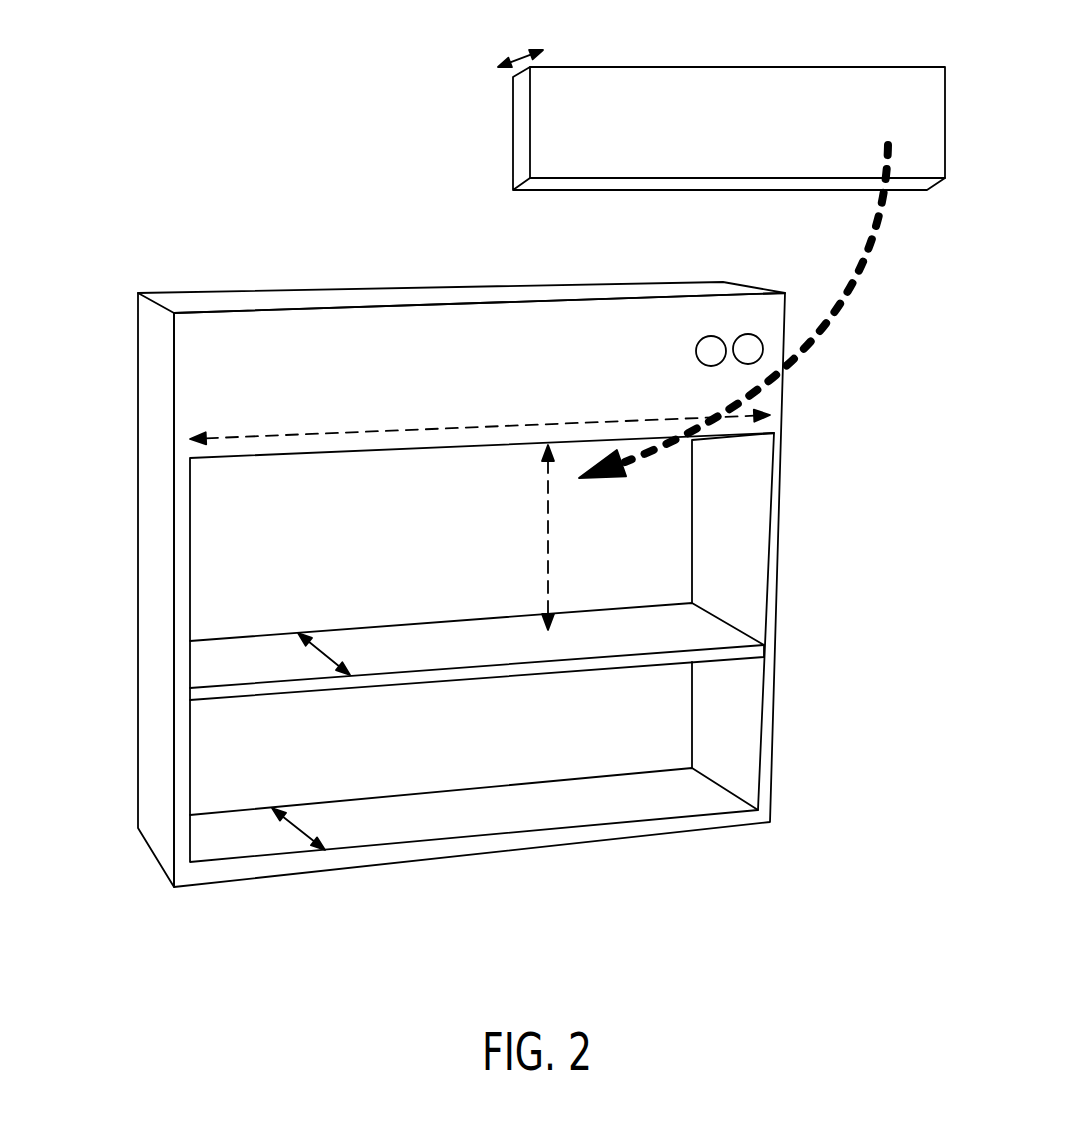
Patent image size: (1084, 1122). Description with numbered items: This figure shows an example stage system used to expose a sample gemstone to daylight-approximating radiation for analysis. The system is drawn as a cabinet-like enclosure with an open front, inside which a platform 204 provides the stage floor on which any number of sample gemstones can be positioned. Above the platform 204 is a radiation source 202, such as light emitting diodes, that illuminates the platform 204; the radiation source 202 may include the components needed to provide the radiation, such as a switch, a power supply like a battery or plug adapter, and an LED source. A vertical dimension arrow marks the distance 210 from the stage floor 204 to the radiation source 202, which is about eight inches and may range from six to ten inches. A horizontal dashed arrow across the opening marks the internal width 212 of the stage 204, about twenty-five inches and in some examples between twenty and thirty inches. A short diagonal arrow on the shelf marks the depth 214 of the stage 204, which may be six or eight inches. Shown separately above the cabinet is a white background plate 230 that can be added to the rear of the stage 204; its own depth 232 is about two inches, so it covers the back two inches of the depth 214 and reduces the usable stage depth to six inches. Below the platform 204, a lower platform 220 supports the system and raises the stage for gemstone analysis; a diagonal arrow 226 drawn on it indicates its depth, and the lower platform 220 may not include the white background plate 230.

The radiation source 202 is at (317, 457).
The platform 204 is at (218, 652).
The distance 210 is at (612, 543).
The internal width 212 is at (347, 430).
The depth 214 is at (318, 654).
The lower platform 220 is at (227, 828).
The depth of bottom shelf 226 is at (298, 822).
The white background plate 230 is at (667, 85).
The depth of white background plate 232 is at (513, 66).